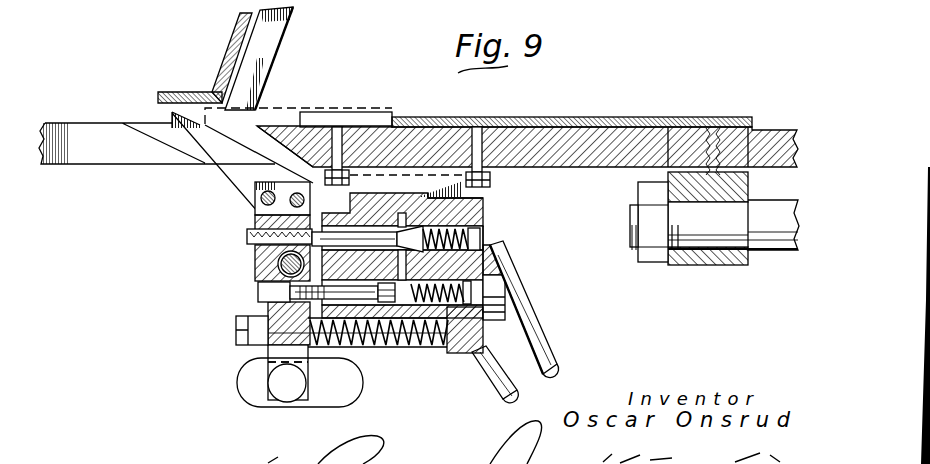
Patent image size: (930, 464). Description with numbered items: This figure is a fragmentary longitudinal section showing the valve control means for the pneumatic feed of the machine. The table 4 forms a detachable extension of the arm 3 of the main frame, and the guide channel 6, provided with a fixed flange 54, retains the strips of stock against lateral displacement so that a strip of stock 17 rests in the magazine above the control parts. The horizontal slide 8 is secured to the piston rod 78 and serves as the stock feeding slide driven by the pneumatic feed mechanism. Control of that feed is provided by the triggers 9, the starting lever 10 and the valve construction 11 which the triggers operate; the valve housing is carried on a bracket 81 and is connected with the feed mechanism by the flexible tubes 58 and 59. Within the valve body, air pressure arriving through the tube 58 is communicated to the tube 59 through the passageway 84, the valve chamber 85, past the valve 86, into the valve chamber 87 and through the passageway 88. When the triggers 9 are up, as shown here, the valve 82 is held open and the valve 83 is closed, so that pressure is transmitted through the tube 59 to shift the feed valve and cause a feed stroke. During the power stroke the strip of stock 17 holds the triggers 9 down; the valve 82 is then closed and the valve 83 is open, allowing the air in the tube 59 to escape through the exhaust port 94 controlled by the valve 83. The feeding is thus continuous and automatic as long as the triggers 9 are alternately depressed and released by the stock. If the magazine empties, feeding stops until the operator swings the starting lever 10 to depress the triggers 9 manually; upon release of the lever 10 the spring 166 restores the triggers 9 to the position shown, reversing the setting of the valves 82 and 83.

The arm 3 is at (70, 140).
The guide channel 6 is at (236, 37).
The fixed flange 54 is at (300, 38).
The strip of stock 17 is at (300, 100).
The horizontal slide 8 is at (622, 126).
The table 4 is at (776, 142).
The triggers 9 is at (212, 160).
The bracket block 81 is at (258, 258).
The valve 82 is at (343, 229).
The valve 86 is at (382, 261).
The passageway 84 is at (506, 212).
The valve chamber 85 is at (489, 202).
The valve construction 11 is at (499, 253).
The valve chamber 87 is at (512, 266).
The passageway 88 is at (524, 296).
The flexible tube 58 is at (537, 340).
The flexible tube 59 is at (485, 362).
The exhaust port 94 is at (382, 350).
The spring 166 is at (368, 341).
The valve 83 is at (392, 346).
The starting lever 10 is at (282, 390).
The piston rod 78 is at (776, 248).